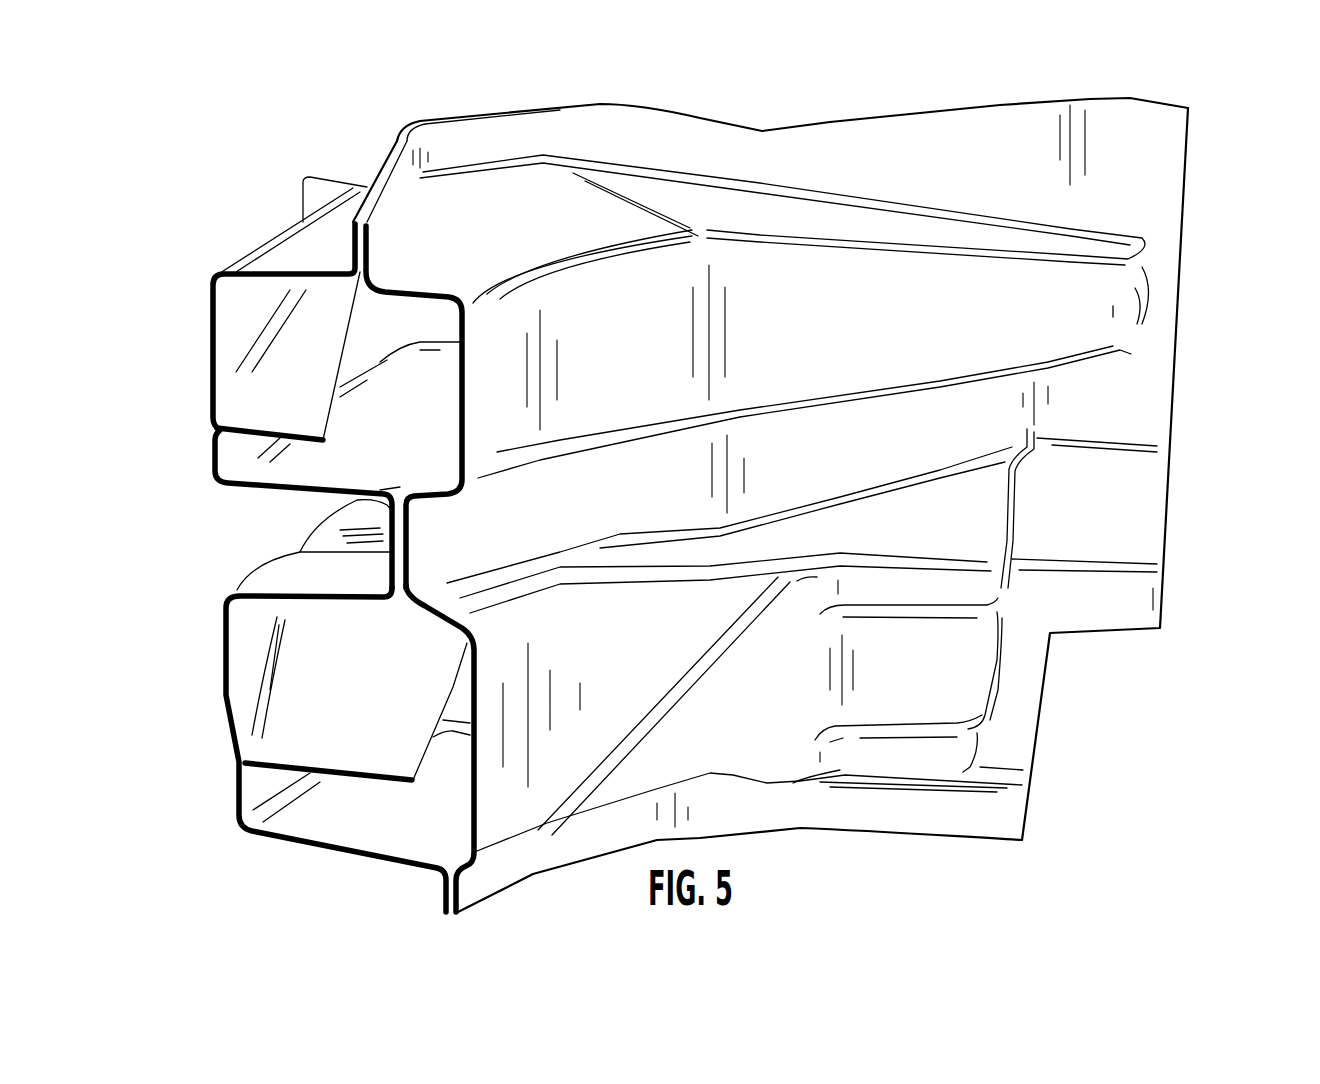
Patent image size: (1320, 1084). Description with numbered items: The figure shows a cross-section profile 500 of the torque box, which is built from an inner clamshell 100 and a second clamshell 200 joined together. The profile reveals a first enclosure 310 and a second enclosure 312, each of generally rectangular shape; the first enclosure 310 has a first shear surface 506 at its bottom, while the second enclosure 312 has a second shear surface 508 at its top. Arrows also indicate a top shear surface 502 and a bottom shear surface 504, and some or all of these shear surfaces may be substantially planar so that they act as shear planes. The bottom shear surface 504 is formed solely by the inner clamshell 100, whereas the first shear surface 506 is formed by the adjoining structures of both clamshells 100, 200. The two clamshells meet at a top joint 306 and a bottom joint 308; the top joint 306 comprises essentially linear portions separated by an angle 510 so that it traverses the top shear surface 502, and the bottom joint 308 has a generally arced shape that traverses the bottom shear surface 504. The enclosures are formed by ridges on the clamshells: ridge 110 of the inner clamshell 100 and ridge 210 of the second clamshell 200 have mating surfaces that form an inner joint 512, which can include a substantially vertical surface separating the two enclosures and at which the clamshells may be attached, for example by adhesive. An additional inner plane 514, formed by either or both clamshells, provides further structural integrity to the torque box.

The inner clamshell 100 is at (293, 236).
The ridge 110 is at (326, 536).
The clamshell 200 is at (1163, 152).
The ridge 210 is at (438, 547).
The top joint 306 is at (640, 105).
The bottom joint 308 is at (527, 877).
The first enclosure 310 is at (443, 392).
The second enclosure 312 is at (450, 779).
The cross-section profile 500 is at (244, 835).
The top shear surface 502 is at (233, 291).
The bottom shear surface 504 is at (257, 830).
The first shear surface 506 is at (233, 463).
The second shear surface 508 is at (236, 610).
The angle 510 is at (401, 129).
The inner joint 512 is at (399, 545).
The additional inner plane 514 is at (336, 393).